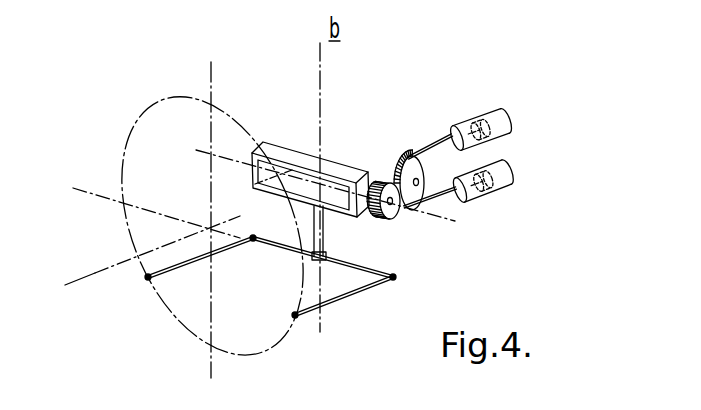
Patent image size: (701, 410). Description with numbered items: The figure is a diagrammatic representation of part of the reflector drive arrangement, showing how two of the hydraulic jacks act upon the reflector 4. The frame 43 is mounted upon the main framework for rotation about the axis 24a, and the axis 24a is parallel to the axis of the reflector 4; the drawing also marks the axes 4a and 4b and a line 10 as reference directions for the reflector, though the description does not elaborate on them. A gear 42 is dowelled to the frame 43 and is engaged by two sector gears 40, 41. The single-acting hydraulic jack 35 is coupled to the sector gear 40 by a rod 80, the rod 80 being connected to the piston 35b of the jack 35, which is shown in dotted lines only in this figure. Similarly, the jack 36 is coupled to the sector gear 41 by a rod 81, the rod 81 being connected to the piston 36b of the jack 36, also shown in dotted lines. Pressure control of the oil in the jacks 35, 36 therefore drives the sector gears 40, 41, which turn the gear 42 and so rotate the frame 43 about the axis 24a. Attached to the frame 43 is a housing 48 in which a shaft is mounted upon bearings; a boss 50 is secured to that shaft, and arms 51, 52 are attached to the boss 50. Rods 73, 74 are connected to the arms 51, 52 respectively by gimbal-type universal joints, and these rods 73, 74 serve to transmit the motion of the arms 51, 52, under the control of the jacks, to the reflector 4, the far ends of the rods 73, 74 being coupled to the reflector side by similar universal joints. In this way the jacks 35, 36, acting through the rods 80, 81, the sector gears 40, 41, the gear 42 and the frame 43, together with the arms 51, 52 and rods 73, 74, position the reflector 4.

The reflector 4 is at (263, 352).
The axis a 4a is at (67, 199).
The axis b 4b is at (222, 60).
The beam axis 10 is at (88, 278).
The axis 24a is at (481, 253).
The single-acting hydraulic jack 35 is at (502, 122).
The piston 35b is at (483, 118).
The single-acting hydraulic jack 36 is at (500, 173).
The piston 36b is at (497, 193).
The sector gear 40 is at (404, 162).
The sector gear 41 is at (418, 165).
The gear 42 is at (389, 213).
The frame 43 is at (272, 148).
The housing 48 is at (325, 240).
The boss 50 is at (319, 256).
The arm 51 is at (371, 280).
The arm 52 is at (276, 243).
The rod 73 is at (349, 295).
The rod 74 is at (226, 250).
The rod 80 is at (432, 146).
The rod 81 is at (433, 200).